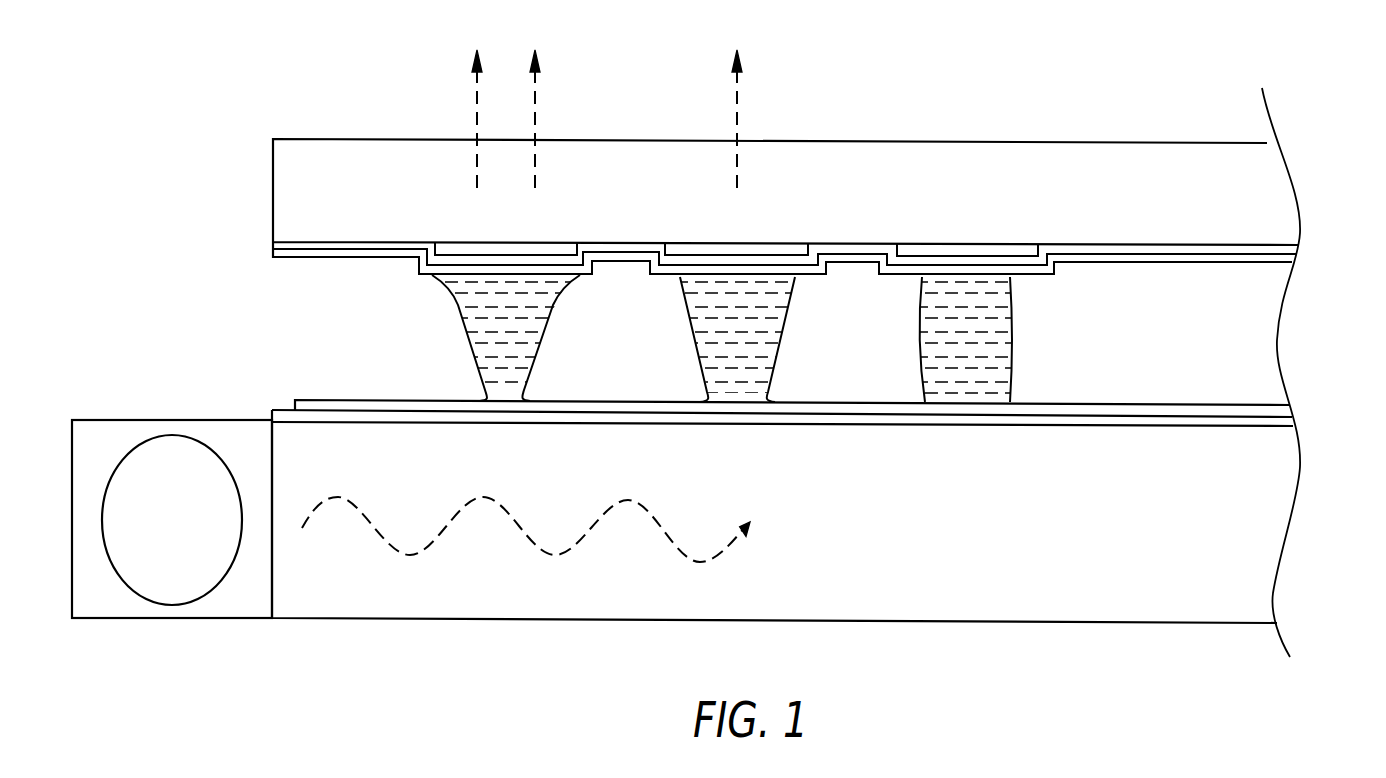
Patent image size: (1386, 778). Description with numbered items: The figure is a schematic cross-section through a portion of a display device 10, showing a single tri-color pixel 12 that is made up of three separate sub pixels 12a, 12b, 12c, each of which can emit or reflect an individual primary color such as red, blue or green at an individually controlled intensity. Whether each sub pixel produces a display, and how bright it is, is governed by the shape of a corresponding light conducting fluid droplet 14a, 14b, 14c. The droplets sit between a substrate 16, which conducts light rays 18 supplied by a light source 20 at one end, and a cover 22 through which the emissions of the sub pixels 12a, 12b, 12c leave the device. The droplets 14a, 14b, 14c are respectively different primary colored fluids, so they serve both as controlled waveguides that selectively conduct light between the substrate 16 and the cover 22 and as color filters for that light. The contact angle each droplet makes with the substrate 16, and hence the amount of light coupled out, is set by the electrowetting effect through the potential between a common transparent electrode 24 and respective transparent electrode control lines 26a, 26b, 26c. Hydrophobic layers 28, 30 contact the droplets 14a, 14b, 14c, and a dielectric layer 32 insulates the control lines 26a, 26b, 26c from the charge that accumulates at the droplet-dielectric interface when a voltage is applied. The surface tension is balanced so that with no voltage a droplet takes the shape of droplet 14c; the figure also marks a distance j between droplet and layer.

The display device 10 is at (791, 20).
The tri-color pixel 12 is at (922, 95).
The sub pixel 12a is at (467, 225).
The sub pixel 12b is at (760, 225).
The sub pixel 12c is at (982, 227).
The light conducting fluid droplet 14a is at (505, 323).
The light conducting fluid droplet 14b is at (738, 337).
The light conducting fluid droplet 14c is at (972, 338).
The substrate 16 is at (1178, 567).
The light rays 18 is at (702, 562).
The light source 20 is at (243, 595).
The cover 22 is at (1134, 178).
The common transparent electrode 24 is at (1238, 422).
The transparent electrode control line 26a is at (455, 248).
The transparent electrode control line 26b is at (701, 248).
The transparent electrode control line 26c is at (931, 247).
The hydrophobic layer 28 is at (1228, 412).
The hydrophobic layer 30 is at (1227, 261).
The dielectric layer 32 is at (1202, 250).
The gap distance j is at (692, 335).